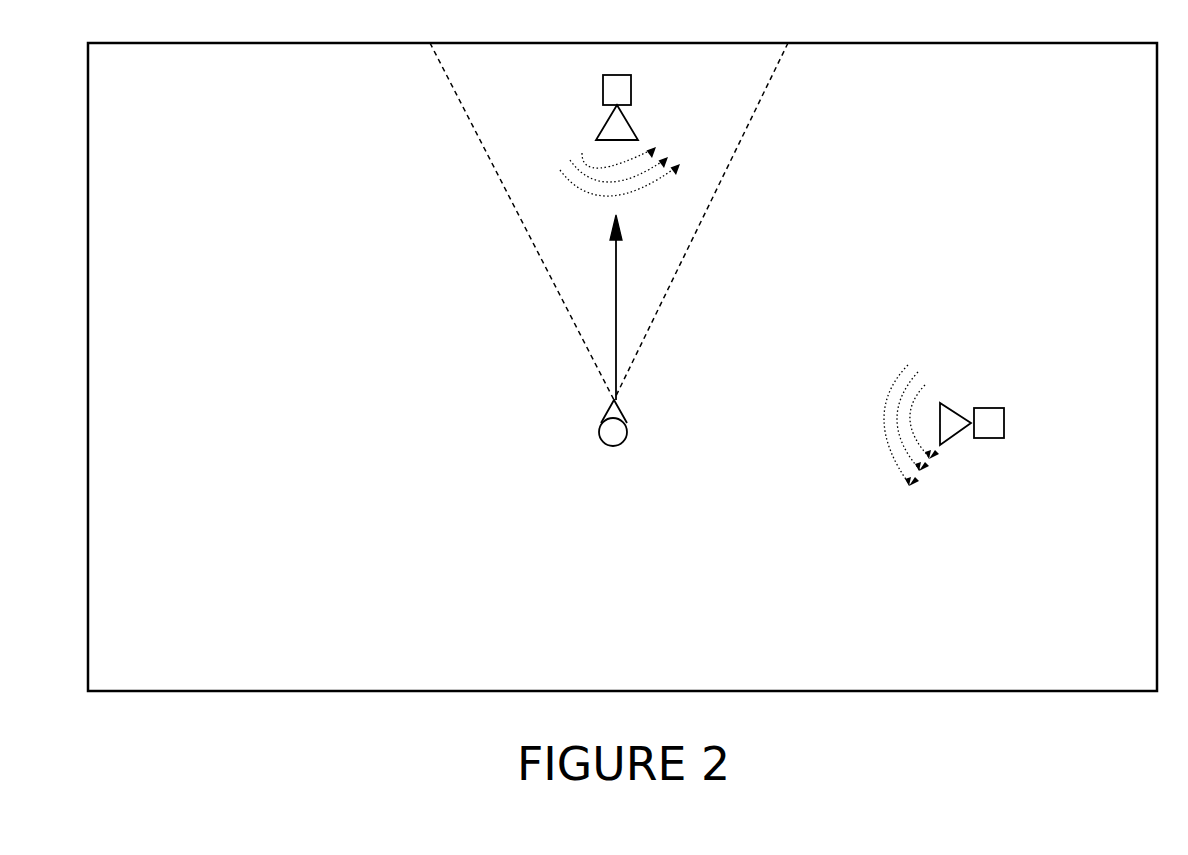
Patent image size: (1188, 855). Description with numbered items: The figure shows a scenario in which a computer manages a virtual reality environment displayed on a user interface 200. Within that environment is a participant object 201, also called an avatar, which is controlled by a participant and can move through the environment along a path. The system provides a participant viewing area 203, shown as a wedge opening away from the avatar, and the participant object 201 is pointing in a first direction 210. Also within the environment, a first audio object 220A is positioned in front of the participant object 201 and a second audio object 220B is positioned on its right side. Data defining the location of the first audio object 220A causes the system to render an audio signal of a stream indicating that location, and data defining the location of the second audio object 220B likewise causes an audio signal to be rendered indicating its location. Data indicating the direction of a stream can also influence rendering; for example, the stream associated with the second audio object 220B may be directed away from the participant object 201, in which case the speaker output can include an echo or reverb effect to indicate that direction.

The user interface 200 is at (213, 691).
The participant object 201 is at (627, 430).
The participant viewing area 203 is at (495, 170).
The first direction 210 is at (616, 258).
The first audio object 220A is at (632, 93).
The second audio object 220B is at (1004, 420).